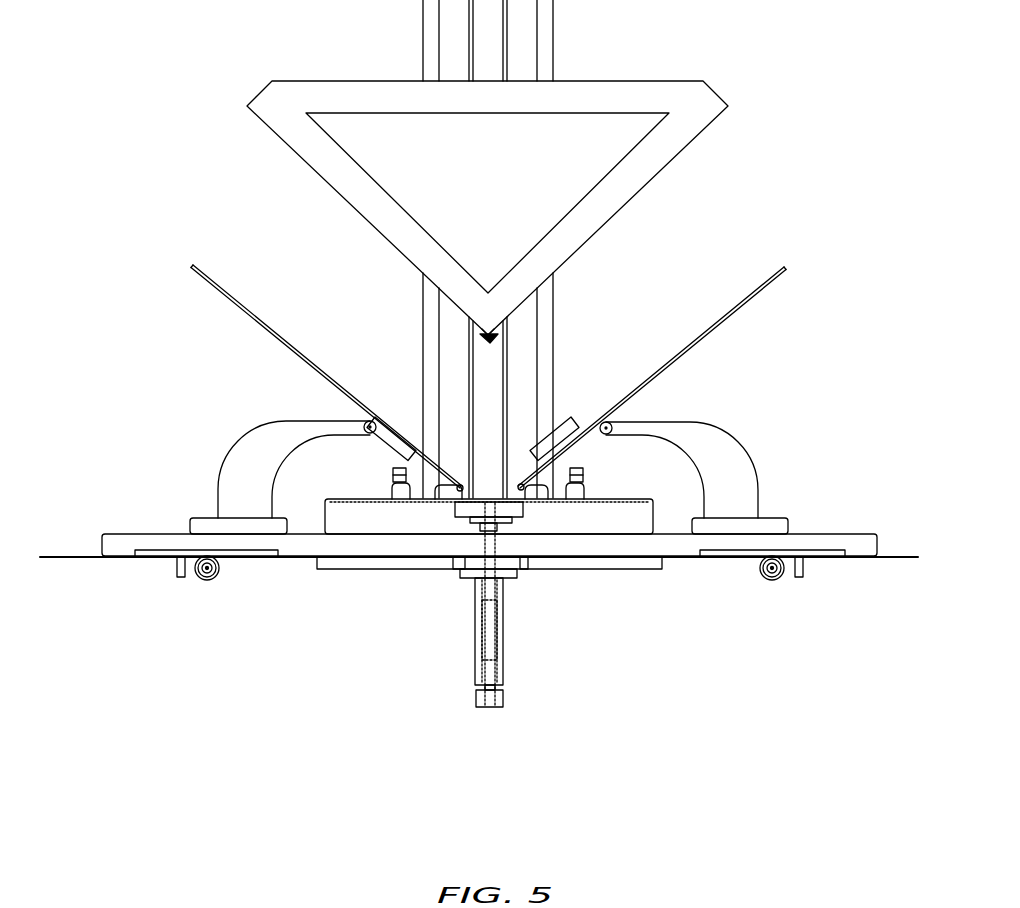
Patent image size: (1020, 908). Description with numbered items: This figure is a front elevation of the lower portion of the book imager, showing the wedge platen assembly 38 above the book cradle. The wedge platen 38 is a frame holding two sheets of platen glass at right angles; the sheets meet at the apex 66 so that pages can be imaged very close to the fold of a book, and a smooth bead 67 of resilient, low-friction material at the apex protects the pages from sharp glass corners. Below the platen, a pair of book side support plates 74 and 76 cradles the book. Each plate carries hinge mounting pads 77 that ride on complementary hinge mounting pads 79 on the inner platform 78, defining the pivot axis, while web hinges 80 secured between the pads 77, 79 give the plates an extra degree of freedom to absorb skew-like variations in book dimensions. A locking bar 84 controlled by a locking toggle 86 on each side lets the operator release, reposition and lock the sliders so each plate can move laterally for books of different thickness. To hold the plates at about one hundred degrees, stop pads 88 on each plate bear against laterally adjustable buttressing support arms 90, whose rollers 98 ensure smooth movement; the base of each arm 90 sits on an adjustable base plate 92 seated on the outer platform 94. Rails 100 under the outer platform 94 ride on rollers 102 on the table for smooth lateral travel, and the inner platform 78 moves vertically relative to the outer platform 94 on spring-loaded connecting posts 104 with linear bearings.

The wedge platen assembly 38 is at (608, 93).
The apex 66 is at (514, 333).
The smooth bead 67 is at (490, 338).
The book side support plate 74 is at (206, 276).
The book side support plate 76 is at (770, 270).
The hinge mounting pad 77 is at (525, 487).
The inner platform 78 is at (605, 525).
The hinge mounting pad 79 is at (443, 502).
The web hinge 80 is at (518, 502).
The locking bar 84 is at (393, 488).
The locking toggle 86 is at (394, 468).
The stop pad 88 is at (402, 448).
The buttressing support arm 90 is at (298, 422).
The adjustable base plate 92 is at (205, 518).
The outer platform 94 is at (843, 540).
The roller 98 is at (380, 419).
The rail 100 is at (160, 550).
The roller 102 is at (208, 579).
The spring-loaded connecting post 104 is at (482, 637).